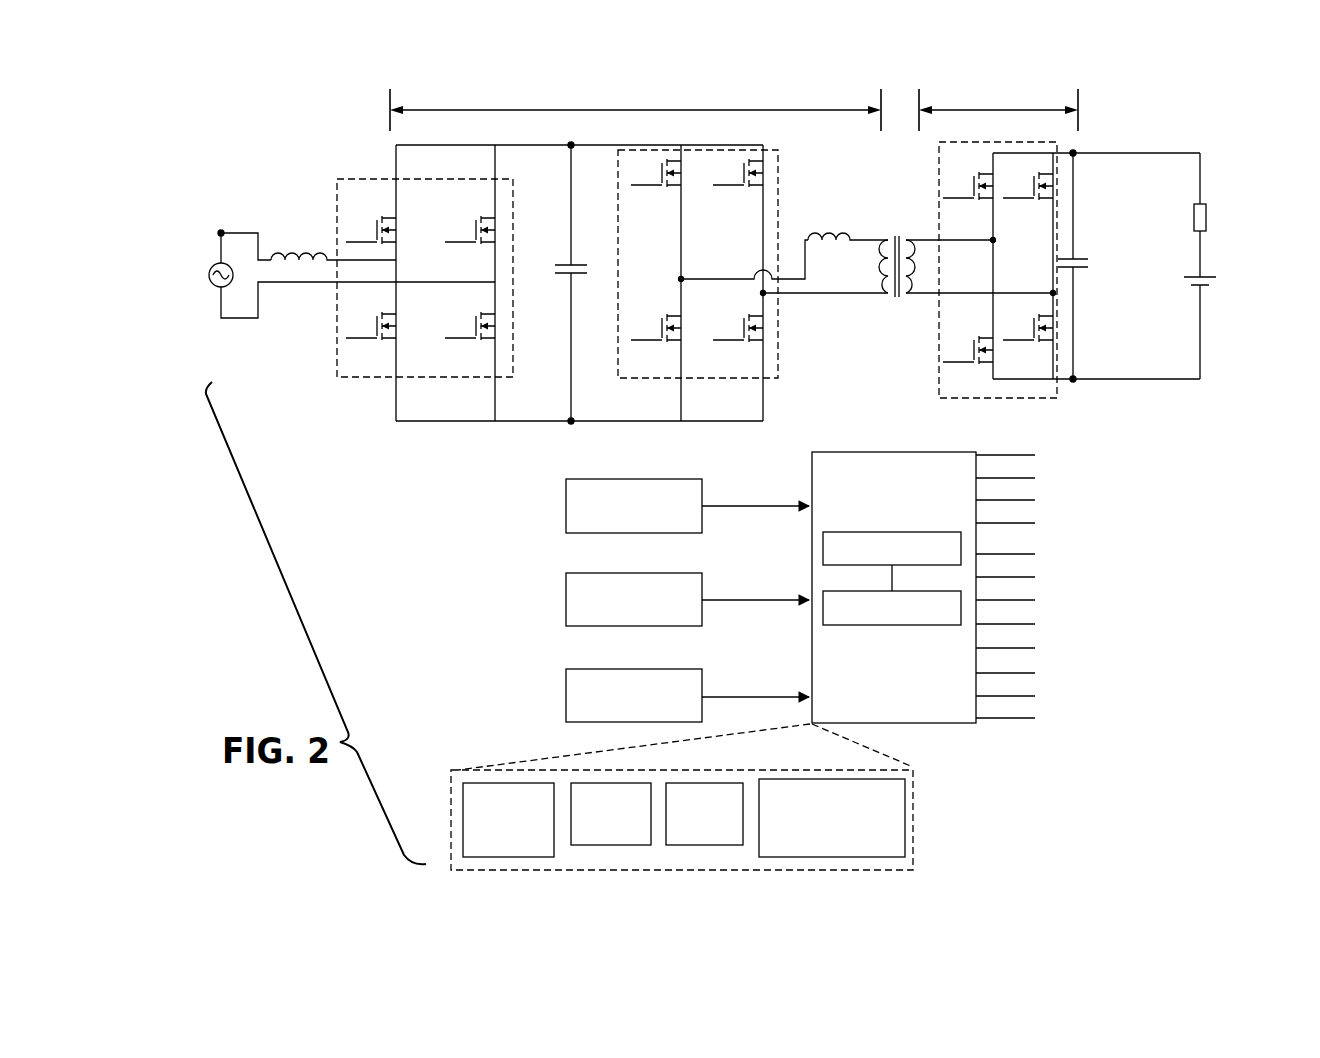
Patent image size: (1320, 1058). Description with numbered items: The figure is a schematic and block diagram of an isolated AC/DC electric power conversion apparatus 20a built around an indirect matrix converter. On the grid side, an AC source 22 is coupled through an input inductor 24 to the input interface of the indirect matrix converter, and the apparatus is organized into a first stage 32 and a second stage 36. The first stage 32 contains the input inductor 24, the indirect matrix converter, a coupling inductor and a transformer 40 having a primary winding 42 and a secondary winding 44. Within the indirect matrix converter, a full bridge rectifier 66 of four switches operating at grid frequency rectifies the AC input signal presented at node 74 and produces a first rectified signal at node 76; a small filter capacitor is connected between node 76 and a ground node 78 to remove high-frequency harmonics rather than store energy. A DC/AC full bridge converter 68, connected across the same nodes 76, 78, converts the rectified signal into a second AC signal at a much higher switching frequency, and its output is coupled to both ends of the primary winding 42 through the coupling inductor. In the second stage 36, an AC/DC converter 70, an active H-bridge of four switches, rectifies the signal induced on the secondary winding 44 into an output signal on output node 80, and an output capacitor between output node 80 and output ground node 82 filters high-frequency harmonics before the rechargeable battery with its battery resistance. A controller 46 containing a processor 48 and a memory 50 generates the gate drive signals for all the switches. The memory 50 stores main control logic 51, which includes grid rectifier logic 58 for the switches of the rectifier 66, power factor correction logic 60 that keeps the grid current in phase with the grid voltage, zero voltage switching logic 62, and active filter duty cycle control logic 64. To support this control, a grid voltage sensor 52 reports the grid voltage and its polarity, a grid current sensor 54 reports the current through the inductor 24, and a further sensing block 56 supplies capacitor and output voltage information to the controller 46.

The electric power conversion apparatus 20a is at (334, 108).
The AC source 22 is at (215, 290).
The input inductor 24 is at (318, 257).
The first stage 32 is at (553, 108).
The second stage 36 is at (950, 106).
The transformer 40 is at (895, 226).
The primary winding 42 is at (884, 268).
The secondary winding 44 is at (916, 270).
The controller 46 is at (872, 451).
The processor 48 is at (822, 545).
The memory 50 is at (822, 608).
The main control logic 51 is at (450, 797).
The grid voltage sensor 52 is at (566, 497).
The grid current sensor 54 is at (566, 595).
The capacitor/output voltage sensor 56 is at (566, 697).
The grid rectifier logic 58 is at (475, 782).
The power factor correction logic 60 is at (570, 790).
The zero voltage switching logic 62 is at (720, 782).
The active filter duty cycle control logic 64 is at (906, 800).
The full bridge rectifier 66 is at (334, 348).
The DC/AC full bridge converter 68 is at (786, 316).
The AC/DC converter 70 is at (1043, 400).
The node 74 is at (220, 232).
The node 76 is at (570, 143).
The ground node 78 is at (571, 422).
The output node 80 is at (1075, 151).
The output ground node 82 is at (1073, 382).